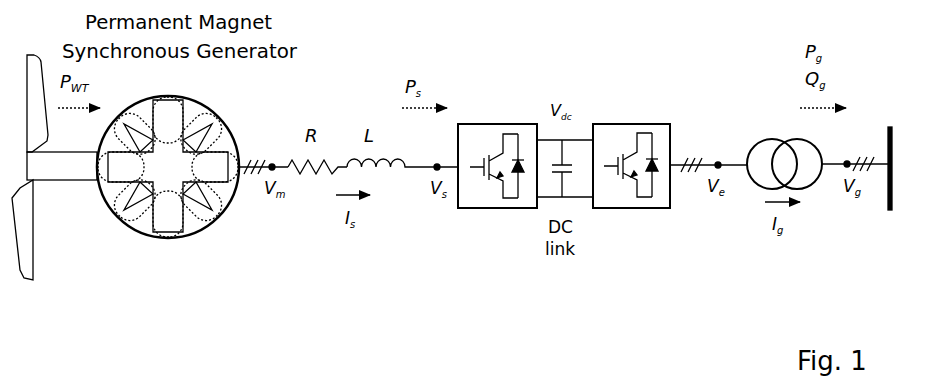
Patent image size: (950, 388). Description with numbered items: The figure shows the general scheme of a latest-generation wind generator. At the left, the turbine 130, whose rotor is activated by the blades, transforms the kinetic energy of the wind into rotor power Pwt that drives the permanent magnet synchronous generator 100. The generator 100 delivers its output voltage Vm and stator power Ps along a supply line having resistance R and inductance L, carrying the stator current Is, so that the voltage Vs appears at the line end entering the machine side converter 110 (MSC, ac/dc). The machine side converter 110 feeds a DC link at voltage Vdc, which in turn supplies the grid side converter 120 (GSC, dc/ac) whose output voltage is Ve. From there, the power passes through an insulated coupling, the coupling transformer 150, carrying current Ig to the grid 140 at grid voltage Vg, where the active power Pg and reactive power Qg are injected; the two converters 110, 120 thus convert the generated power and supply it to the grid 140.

The permanent magnet synchronous generator 100 is at (215, 226).
The machine side converter 110 is at (481, 247).
The grid side converter 120 is at (643, 250).
The turbine 130 is at (54, 241).
The grid 140 is at (892, 215).
The coupling transformer 150 is at (769, 138).